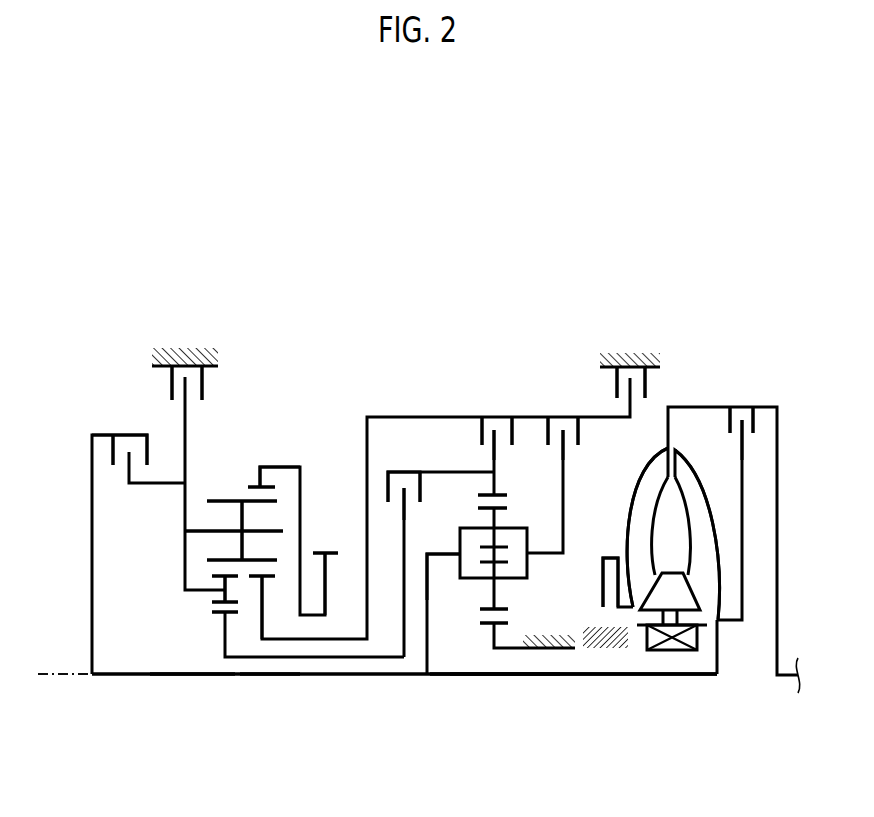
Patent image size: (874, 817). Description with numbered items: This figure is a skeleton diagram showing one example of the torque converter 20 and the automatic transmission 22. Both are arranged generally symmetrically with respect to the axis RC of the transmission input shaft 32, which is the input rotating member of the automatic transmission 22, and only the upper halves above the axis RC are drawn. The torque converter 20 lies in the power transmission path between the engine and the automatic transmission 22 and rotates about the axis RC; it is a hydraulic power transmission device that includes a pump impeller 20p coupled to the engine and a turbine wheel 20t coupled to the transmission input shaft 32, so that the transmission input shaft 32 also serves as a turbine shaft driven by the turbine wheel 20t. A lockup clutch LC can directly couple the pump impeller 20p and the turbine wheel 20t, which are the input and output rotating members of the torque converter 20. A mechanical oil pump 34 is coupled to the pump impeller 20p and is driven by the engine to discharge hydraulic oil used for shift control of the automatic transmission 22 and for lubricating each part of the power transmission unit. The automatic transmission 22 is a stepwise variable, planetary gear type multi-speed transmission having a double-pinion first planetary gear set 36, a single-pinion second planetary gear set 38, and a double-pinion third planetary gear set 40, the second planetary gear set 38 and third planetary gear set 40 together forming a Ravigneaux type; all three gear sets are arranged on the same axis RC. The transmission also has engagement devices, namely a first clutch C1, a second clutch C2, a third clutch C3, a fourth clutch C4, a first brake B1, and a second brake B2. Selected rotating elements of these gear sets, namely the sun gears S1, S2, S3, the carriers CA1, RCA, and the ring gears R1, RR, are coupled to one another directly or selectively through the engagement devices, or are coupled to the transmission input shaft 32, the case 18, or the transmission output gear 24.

The case 18 is at (188, 357).
The torque converter 20 is at (639, 460).
The pump impeller 20p is at (627, 531).
The turbine wheel 20t is at (702, 520).
The automatic transmission 22 is at (163, 328).
The transmission output gear 24 is at (331, 550).
The transmission input shaft 32 is at (570, 676).
The mechanical oil pump 34 is at (602, 580).
The double-pinion first planetary gear set 36 is at (496, 688).
The single-pinion second planetary gear set 38 is at (262, 688).
The double-pinion third planetary gear set 40 is at (221, 688).
The first brake B1 is at (649, 384).
The second brake B2 is at (201, 383).
The first clutch C1 is at (404, 482).
The second clutch C2 is at (119, 435).
The third clutch C3 is at (497, 424).
The fourth clutch C4 is at (562, 424).
The carrier CA1 is at (442, 536).
The ring gear R1 is at (500, 492).
The sun gear S1 is at (490, 620).
The sun gear S2 is at (270, 580).
The sun gear S3 is at (224, 606).
The ring gear RR is at (251, 483).
The carrier RCA is at (184, 547).
The lockup clutch LC is at (722, 406).
The axis RC is at (52, 677).